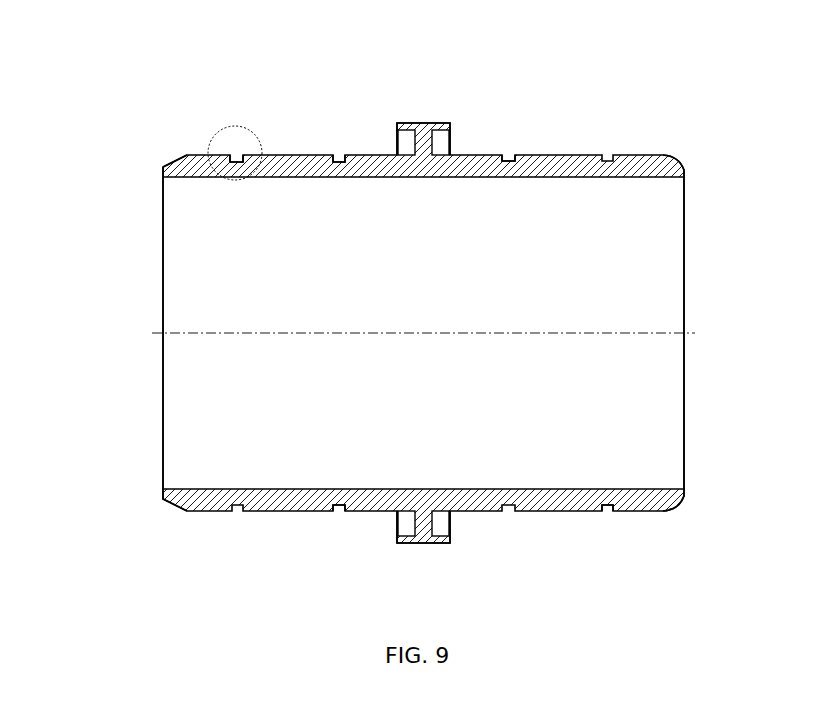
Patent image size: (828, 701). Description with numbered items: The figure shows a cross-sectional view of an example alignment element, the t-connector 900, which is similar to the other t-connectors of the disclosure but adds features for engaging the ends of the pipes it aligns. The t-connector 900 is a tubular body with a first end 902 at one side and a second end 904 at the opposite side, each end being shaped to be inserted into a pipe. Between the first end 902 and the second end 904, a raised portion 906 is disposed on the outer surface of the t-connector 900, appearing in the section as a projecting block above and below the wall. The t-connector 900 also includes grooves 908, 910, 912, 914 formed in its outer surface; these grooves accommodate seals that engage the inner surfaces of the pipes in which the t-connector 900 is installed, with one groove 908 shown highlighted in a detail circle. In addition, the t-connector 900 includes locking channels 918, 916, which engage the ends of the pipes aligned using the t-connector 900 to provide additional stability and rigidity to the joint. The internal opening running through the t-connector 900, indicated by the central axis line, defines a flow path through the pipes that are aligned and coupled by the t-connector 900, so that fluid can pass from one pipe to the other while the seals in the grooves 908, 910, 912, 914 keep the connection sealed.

The t-connector 900 is at (610, 113).
The first end 902 is at (685, 238).
The second end 904 is at (162, 210).
The raised portion 906 is at (412, 122).
The groove 908 is at (233, 150).
The groove 910 is at (330, 508).
The groove 912 is at (510, 152).
The groove 914 is at (610, 508).
The locking channel 916 is at (450, 138).
The locking channel 918 is at (385, 135).